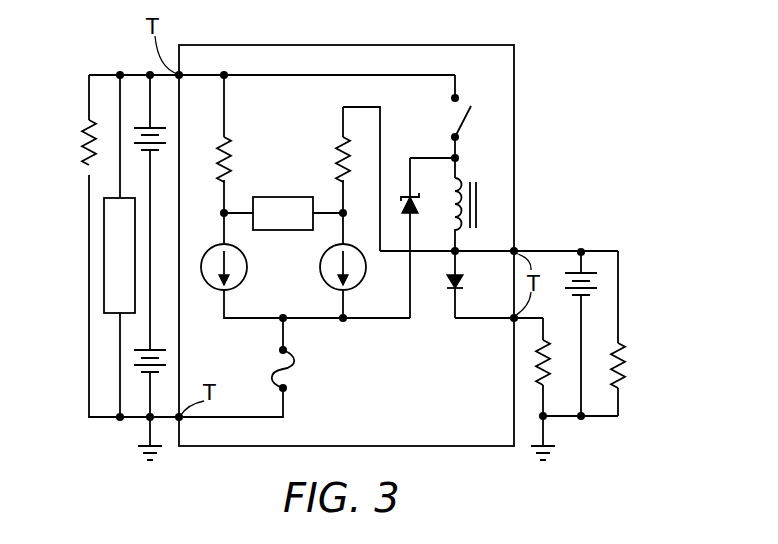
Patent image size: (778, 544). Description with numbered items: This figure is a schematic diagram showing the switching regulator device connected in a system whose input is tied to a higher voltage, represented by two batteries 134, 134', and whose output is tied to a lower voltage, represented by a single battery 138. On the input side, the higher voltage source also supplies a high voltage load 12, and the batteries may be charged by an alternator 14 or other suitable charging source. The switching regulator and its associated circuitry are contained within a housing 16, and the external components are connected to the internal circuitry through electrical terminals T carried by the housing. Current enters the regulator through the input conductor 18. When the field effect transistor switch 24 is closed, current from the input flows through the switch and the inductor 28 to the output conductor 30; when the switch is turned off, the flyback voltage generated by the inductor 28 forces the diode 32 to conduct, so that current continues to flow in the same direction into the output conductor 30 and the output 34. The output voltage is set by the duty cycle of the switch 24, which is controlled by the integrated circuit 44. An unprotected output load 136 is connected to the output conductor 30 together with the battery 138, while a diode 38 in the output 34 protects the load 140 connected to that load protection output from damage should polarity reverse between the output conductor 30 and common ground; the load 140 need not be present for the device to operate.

The high voltage load 12 is at (86, 150).
The alternator 14 is at (104, 243).
The housing 16 is at (515, 95).
The input conductor 18 is at (208, 74).
The field effect transistor switch 24 is at (465, 115).
The inductor 28 is at (480, 222).
The output conductor 30 is at (488, 253).
The diode 32 is at (405, 203).
The output 34 is at (497, 319).
The diode 38 is at (447, 283).
The integrated circuit 44 is at (298, 197).
The battery 134 is at (103, 119).
The battery 134' is at (100, 356).
The unprotected output load 136 is at (622, 373).
The battery 138 is at (592, 290).
The load 140 is at (545, 362).